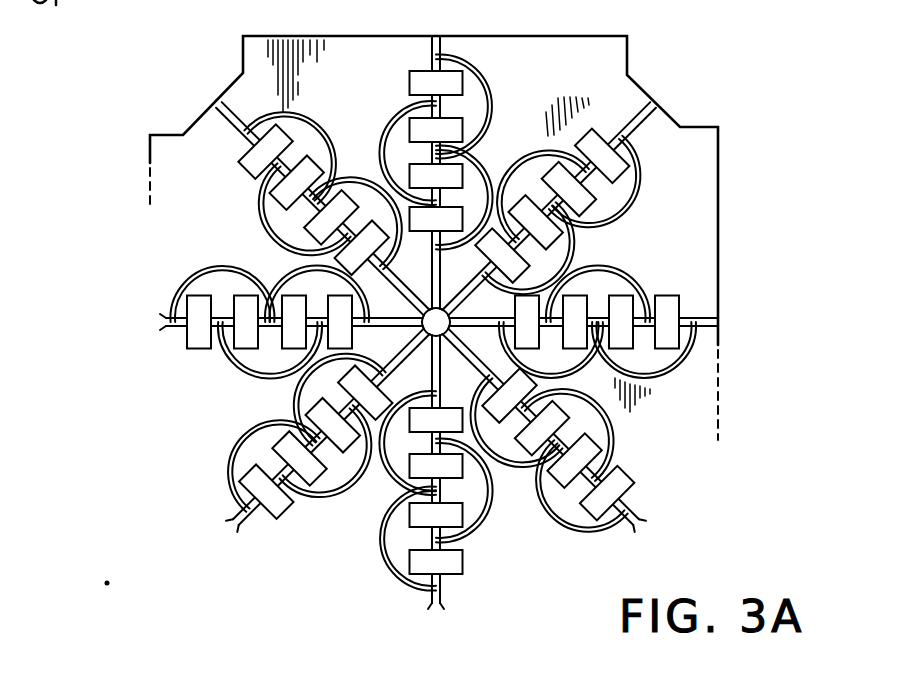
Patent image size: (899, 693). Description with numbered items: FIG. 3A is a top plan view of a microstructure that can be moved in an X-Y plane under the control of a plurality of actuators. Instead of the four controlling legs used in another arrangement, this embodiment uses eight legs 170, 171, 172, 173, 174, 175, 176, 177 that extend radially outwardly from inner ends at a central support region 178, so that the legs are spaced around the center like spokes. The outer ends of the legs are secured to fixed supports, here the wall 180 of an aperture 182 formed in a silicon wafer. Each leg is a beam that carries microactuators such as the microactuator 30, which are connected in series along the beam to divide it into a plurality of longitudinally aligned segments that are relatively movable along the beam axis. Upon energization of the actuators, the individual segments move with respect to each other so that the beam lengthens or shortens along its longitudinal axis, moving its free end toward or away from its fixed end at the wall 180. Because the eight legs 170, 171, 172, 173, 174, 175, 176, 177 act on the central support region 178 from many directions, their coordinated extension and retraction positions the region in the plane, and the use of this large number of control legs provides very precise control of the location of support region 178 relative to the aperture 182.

The microactuator 30 is at (394, 78).
The leg 170 is at (442, 173).
The leg 171 is at (632, 222).
The leg 172 is at (635, 274).
The leg 173 is at (623, 438).
The leg 174 is at (491, 523).
The leg 175 is at (332, 506).
The leg 176 is at (248, 378).
The leg 177 is at (255, 216).
The central support region 178 is at (438, 328).
The wall 180 is at (719, 235).
The aperture 182 is at (683, 152).